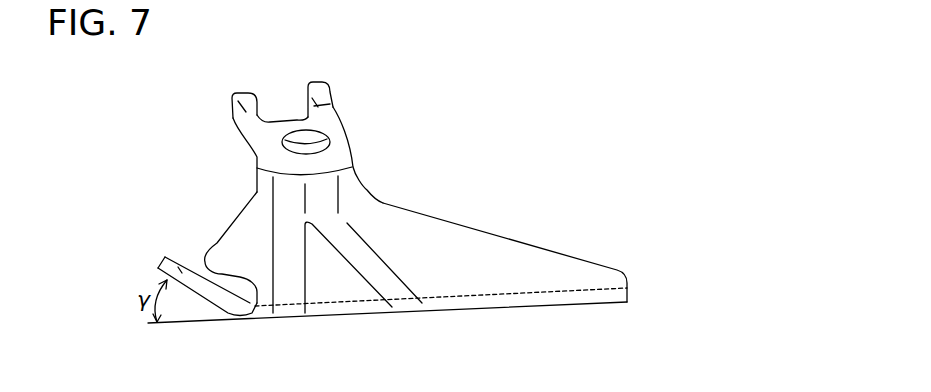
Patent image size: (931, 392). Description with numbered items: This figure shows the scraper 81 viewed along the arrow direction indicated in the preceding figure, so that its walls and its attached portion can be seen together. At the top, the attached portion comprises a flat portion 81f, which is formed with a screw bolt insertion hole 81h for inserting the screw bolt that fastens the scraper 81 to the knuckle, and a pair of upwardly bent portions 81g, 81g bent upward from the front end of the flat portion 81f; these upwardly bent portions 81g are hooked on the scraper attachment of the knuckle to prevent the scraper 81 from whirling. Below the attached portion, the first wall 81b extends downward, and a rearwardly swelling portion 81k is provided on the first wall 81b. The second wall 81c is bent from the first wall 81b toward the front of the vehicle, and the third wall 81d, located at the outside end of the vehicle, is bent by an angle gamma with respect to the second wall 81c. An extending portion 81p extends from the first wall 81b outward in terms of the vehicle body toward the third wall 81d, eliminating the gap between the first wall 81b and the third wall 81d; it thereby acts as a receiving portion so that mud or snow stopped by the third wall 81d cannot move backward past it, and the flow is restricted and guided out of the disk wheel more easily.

The scraper 81 is at (447, 110).
The first wall 81b is at (472, 250).
The second wall 81c is at (378, 314).
The third wall 81d is at (180, 267).
The flat portion 81f is at (266, 148).
The upwardly bent portion 81g is at (233, 115).
The screw bolt insertion hole 81h is at (310, 140).
The rearwardly swelling portion 81k is at (323, 297).
The extending portion 81p is at (217, 252).